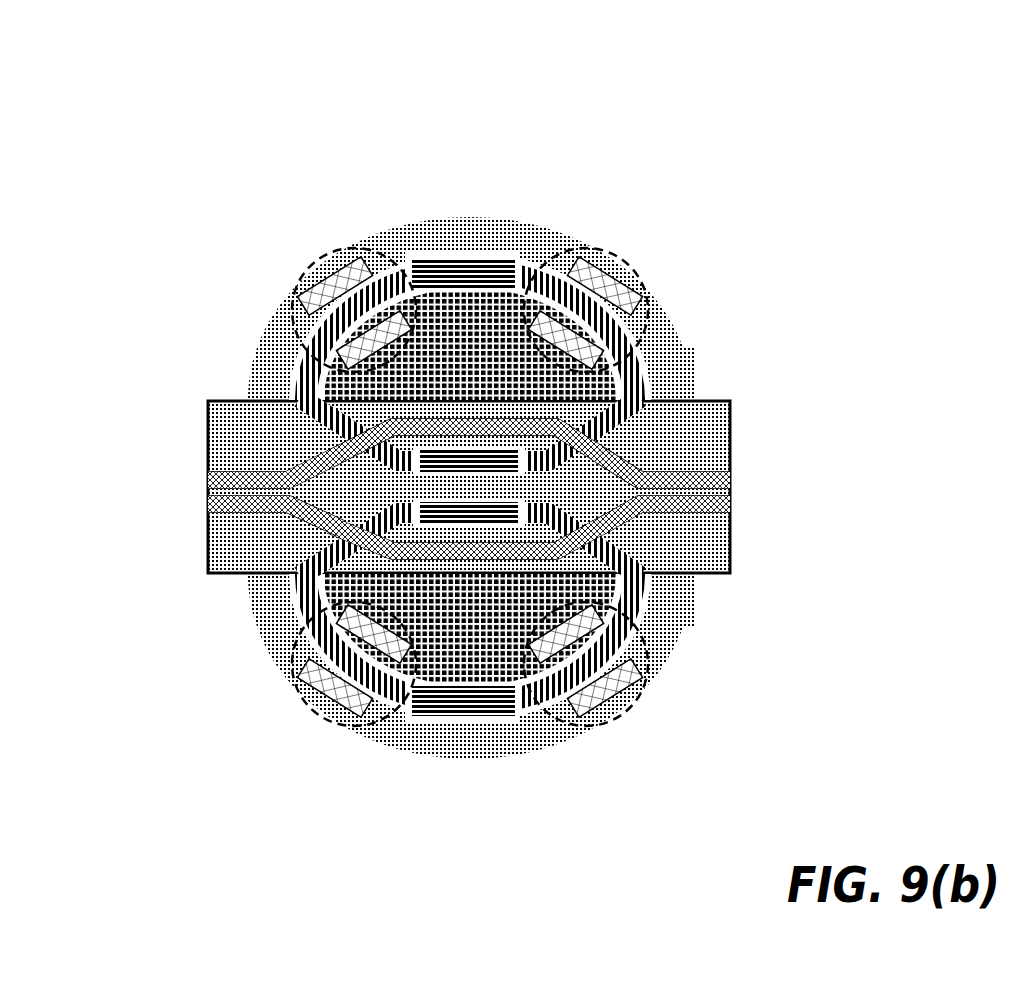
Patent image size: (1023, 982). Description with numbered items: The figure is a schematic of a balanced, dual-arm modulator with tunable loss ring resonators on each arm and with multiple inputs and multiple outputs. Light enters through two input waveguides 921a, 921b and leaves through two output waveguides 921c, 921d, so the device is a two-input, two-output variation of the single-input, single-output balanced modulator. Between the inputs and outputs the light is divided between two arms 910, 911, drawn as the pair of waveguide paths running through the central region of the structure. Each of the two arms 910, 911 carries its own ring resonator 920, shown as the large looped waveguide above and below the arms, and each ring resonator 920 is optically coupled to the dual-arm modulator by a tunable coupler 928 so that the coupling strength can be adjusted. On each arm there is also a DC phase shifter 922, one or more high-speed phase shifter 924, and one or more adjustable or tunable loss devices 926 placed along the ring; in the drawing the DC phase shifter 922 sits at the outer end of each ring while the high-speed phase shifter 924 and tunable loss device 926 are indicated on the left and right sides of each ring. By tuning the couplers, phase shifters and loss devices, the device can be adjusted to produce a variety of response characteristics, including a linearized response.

The arm 910 is at (610, 455).
The arm 911 is at (610, 520).
The ring resonator 920 is at (633, 327).
The input waveguide 921a is at (208, 478).
The input waveguide 921b is at (208, 510).
The output waveguide 921c is at (735, 478).
The output waveguide 921d is at (735, 508).
The DC phase shifter 922 is at (470, 258).
The high-speed phase shifter 924 is at (298, 285).
The tunable loss device 926 is at (643, 280).
The tunable coupler 928 is at (330, 448).